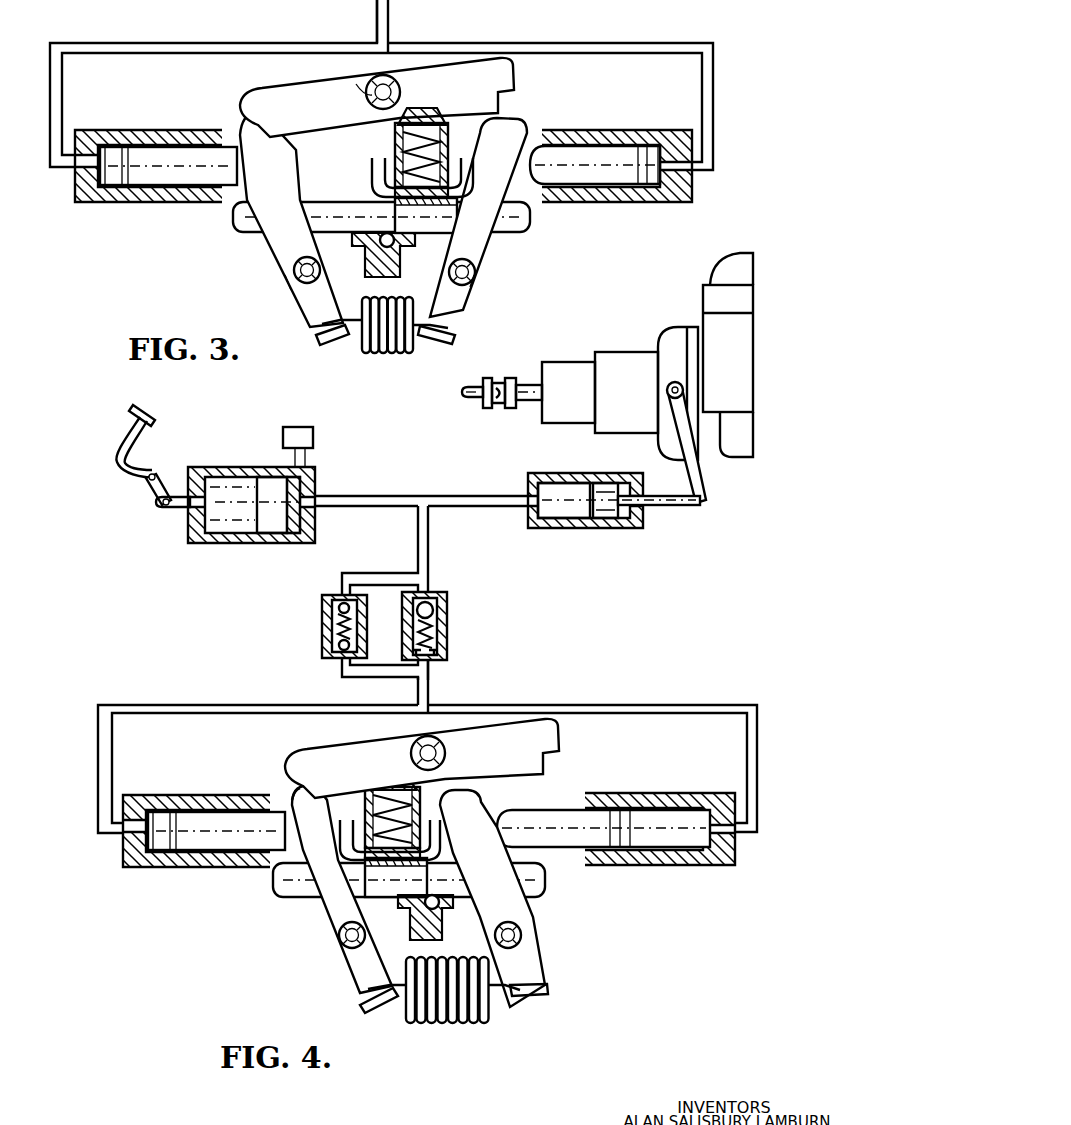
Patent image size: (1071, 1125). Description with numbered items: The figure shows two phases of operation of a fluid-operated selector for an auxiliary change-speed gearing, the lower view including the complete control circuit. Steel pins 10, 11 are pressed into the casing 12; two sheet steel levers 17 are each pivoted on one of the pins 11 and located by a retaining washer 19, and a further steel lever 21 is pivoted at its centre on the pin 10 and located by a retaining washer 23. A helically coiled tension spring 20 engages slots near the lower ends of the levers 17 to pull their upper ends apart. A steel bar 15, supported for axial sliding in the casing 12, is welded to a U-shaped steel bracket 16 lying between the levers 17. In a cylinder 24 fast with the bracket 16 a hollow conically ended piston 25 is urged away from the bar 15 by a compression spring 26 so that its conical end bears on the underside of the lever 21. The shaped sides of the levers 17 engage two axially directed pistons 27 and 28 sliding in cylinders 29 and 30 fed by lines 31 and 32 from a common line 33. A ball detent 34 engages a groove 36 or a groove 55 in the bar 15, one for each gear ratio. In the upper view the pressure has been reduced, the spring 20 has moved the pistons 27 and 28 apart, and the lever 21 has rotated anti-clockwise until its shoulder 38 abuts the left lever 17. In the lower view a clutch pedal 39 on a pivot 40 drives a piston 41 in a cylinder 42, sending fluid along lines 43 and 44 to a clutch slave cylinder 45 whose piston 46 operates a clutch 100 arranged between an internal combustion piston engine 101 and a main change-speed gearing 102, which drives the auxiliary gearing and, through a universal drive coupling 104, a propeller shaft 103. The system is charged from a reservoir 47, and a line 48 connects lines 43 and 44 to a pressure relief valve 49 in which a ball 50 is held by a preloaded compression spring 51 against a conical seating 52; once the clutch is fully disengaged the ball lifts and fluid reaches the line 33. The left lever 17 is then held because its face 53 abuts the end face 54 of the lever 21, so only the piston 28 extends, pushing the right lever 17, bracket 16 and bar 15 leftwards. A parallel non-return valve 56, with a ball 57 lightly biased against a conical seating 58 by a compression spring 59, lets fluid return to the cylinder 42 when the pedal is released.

In FIG. 3, the pin 10 is at (366, 79).
In FIG. 4, the pin 10 is at (446, 752).
In FIG. 3, the pin 11 is at (293, 280).
In FIG. 4, the pin 11 is at (340, 937).
In FIG. 3, the casing 12 is at (567, 368).
In FIG. 3, the steel bar 15 is at (253, 238).
In FIG. 4, the steel bar 15 is at (280, 873).
In FIG. 3, the U-shaped steel bracket 16 is at (372, 165).
In FIG. 4, the U-shaped steel bracket 16 is at (437, 832).
In FIG. 3, the sheet steel levers 17 is at (310, 303).
In FIG. 4, the sheet steel levers 17 is at (357, 965).
In FIG. 3, the spring steel retaining washer 19 is at (293, 260).
In FIG. 3, the helically coiled tension spring 20 is at (413, 350).
In FIG. 4, the helically coiled tension spring 20 is at (447, 1022).
In FIG. 3, the steel lever 21 is at (267, 92).
In FIG. 4, the steel lever 21 is at (536, 738).
In FIG. 3, the spring steel retaining washer 23 is at (356, 86).
In FIG. 3, the cylinder 24 is at (450, 150).
In FIG. 3, the hollow conically ended piston 25 is at (397, 135).
In FIG. 4, the hollow conically ended piston 25 is at (416, 792).
In FIG. 3, the helically coiled compression spring 26 is at (425, 124).
In FIG. 4, the helically coiled compression spring 26 is at (398, 775).
In FIG. 3, the piston 27 is at (140, 157).
In FIG. 4, the piston 27 is at (197, 818).
In FIG. 3, the piston 28 is at (585, 152).
In FIG. 4, the piston 28 is at (560, 818).
In FIG. 3, the cylinder 29 is at (155, 192).
In FIG. 4, the cylinder 29 is at (190, 857).
In FIG. 3, the cylinder 30 is at (630, 193).
In FIG. 4, the cylinder 30 is at (645, 858).
In FIG. 3, the line 31 is at (222, 43).
In FIG. 4, the line 31 is at (113, 837).
In FIG. 3, the line 32 is at (621, 43).
In FIG. 4, the line 32 is at (595, 797).
In FIG. 3, the common line 33 is at (392, 13).
In FIG. 4, the common line 33 is at (428, 685).
In FIG. 3, the ball detent 34 is at (365, 248).
In FIG. 4, the ball detent 34 is at (417, 912).
In FIG. 3, the groove 36 is at (390, 217).
In FIG. 4, the groove 36 is at (360, 883).
In FIG. 3, the shoulder 38 is at (243, 115).
In FIG. 4, the shoulder 38 is at (298, 785).
In FIG. 3, the clutch pedal 39 is at (147, 413).
In FIG. 3, the pivot 40 is at (152, 480).
In FIG. 3, the piston 41 is at (273, 487).
In FIG. 3, the cylinder 42 is at (301, 495).
In FIG. 3, the line 43 is at (377, 496).
In FIG. 3, the line 44 is at (486, 497).
In FIG. 3, the clutch slave cylinder 45 is at (557, 497).
In FIG. 3, the piston 46 is at (609, 494).
In FIG. 3, the reservoir 47 is at (287, 430).
In FIG. 3, the line 48 is at (425, 543).
In FIG. 3, the pressure relief valve 49 is at (447, 625).
In FIG. 3, the ball 50 is at (445, 608).
In FIG. 3, the preloaded helically coiled compression spring 51 is at (445, 640).
In FIG. 3, the conical seating 52 is at (443, 595).
In FIG. 4, the face 53 is at (298, 790).
In FIG. 4, the end face 54 is at (314, 789).
In FIG. 4, the groove 55 is at (437, 887).
In FIG. 3, the non-return valve 56 is at (331, 628).
In FIG. 3, the ball 57 is at (331, 643).
In FIG. 3, the conical seating 58 is at (357, 626).
In FIG. 3, the compression spring 59 is at (331, 610).
In FIG. 3, the clutch 100 is at (677, 340).
In FIG. 3, the internal combustion piston engine 101 is at (712, 367).
In FIG. 3, the main change-speed gearing 102 is at (620, 362).
In FIG. 3, the propeller shaft 103 is at (470, 400).
In FIG. 3, the universal drive coupling 104 is at (515, 377).